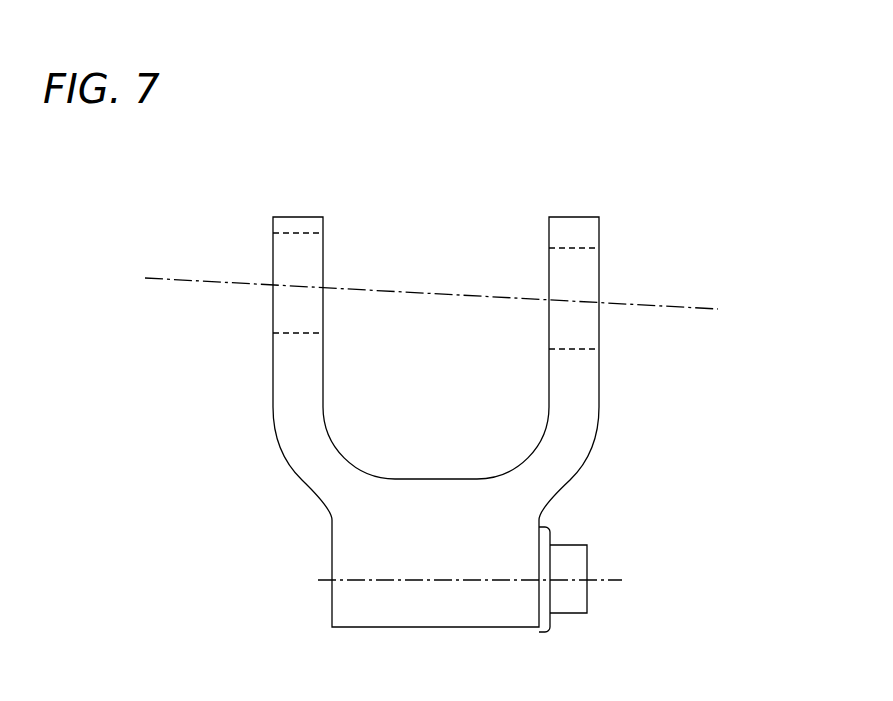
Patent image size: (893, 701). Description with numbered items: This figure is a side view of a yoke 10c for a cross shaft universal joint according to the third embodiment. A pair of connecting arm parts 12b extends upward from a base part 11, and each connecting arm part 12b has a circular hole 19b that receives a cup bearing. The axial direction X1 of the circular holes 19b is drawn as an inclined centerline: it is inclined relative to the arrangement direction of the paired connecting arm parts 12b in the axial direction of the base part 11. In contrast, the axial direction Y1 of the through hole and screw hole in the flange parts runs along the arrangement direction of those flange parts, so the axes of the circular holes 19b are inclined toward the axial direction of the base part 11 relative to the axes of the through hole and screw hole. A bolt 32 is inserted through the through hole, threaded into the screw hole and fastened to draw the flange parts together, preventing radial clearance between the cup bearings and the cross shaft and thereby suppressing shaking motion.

The yoke 10c is at (615, 231).
The connecting arm part 12b is at (292, 252).
The circular hole 19b is at (296, 333).
The base part 11 is at (360, 564).
The bolt 32 is at (570, 598).
The axial direction of the circular holes X1 is at (433, 292).
The axial direction of the through hole and screw hole Y1 is at (596, 577).